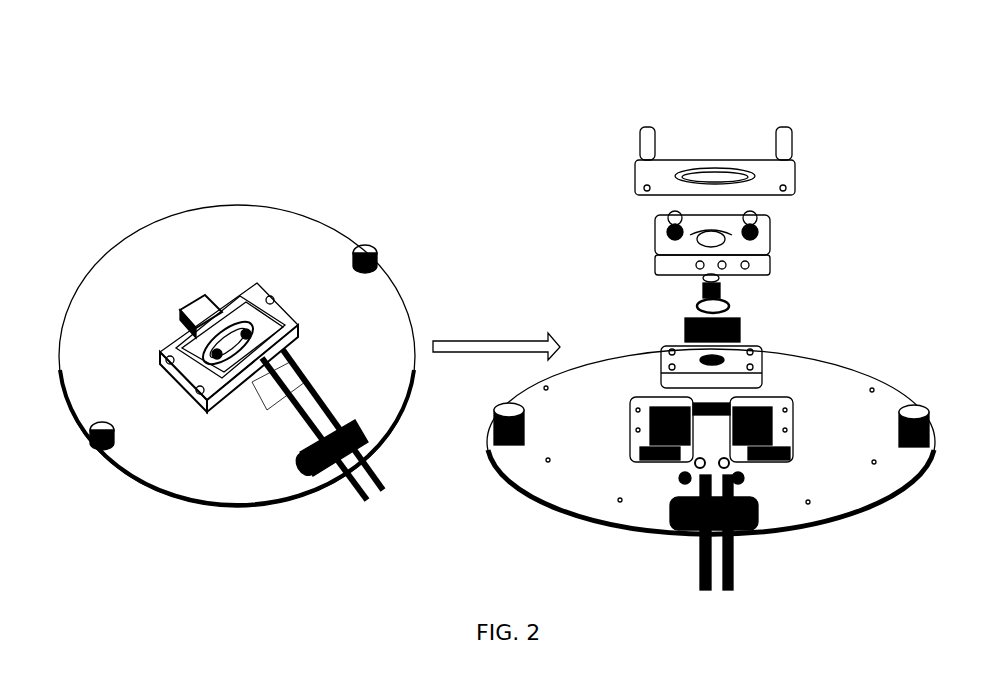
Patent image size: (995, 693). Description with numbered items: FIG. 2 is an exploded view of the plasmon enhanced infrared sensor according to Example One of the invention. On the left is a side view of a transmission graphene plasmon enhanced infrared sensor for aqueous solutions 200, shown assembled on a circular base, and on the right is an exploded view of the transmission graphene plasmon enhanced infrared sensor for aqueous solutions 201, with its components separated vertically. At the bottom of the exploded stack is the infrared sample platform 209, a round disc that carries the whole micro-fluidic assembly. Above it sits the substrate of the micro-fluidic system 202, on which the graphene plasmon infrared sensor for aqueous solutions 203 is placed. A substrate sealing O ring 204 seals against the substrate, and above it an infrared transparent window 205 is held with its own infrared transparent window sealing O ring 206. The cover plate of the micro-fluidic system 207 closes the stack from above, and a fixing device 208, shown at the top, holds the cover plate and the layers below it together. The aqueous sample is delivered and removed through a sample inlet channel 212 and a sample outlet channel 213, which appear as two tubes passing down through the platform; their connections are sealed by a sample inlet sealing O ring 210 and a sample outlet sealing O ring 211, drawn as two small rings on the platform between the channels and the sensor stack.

The side view of transmission graphene plasmon enhanced infrared sensor for aqueous 200 is at (223, 165).
The exploded view of transmission graphene plasmon enhanced infrared sensor for aque 201 is at (570, 175).
The substrate of micro-fluidic system 202 is at (744, 358).
The graphene plasmon infrared sensor for aqueous solutions 203 is at (742, 330).
The substrate sealing O ring 204 is at (695, 306).
The infrared transparent window 205 is at (722, 286).
The infrared transparent window sealing O ring 206 is at (701, 282).
The cover plate of micro-fluidic system 207 is at (772, 240).
The fixing device 208 is at (794, 180).
The infrared sample platform 209 is at (828, 464).
The sample inlet sealing O ring 210 is at (695, 465).
The sample outlet sealing O ring 211 is at (730, 466).
The sample inlet channel 212 is at (692, 553).
The sample outlet channel 213 is at (740, 553).